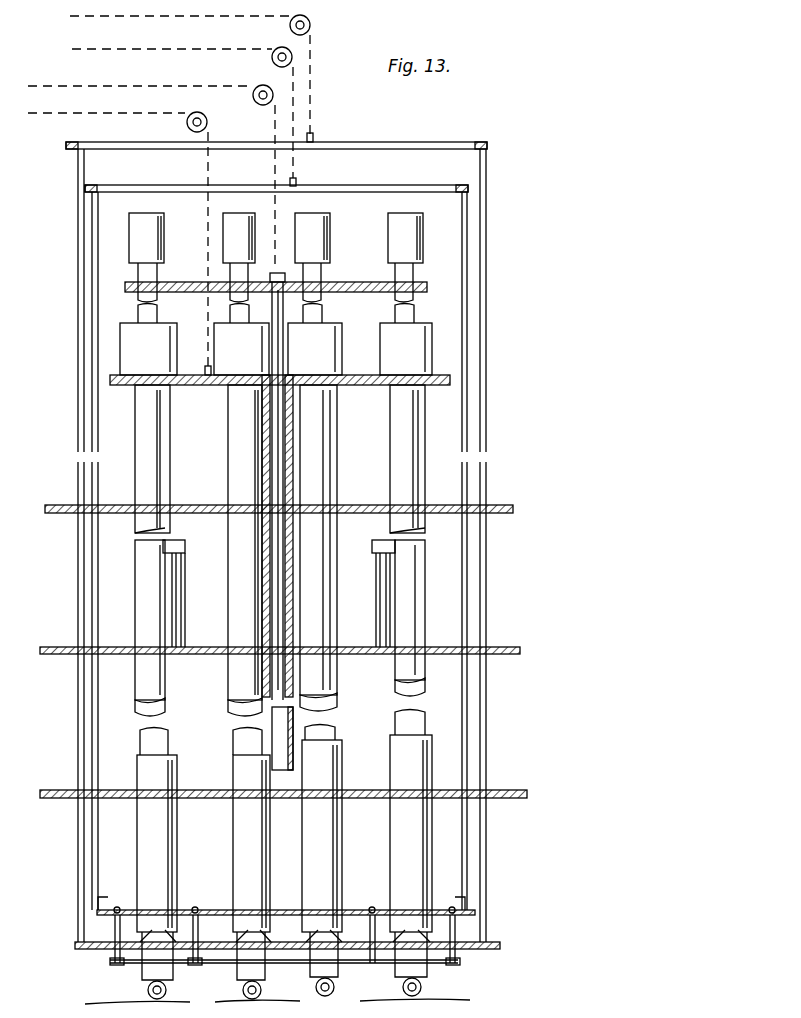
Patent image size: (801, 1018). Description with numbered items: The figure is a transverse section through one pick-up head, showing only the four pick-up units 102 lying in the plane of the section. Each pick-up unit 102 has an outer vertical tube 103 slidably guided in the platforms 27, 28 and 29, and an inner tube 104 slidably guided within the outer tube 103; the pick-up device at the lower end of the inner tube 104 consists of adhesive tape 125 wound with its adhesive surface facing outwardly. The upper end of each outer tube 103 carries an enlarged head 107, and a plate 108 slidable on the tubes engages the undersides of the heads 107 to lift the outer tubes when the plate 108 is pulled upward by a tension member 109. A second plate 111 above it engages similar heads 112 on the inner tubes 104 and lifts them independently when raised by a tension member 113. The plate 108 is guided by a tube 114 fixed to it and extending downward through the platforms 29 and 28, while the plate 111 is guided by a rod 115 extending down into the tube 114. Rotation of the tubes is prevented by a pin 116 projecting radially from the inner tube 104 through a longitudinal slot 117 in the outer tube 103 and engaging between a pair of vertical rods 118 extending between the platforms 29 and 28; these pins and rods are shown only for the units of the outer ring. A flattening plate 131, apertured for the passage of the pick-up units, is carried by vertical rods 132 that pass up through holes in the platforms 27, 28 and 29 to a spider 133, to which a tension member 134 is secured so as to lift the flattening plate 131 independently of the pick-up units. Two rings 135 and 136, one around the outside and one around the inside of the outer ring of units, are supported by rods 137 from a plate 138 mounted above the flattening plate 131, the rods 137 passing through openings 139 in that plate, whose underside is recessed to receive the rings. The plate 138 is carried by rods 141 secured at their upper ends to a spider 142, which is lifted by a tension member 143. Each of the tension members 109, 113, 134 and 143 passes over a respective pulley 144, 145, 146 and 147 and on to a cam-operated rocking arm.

The platform 27 is at (526, 790).
The platform 28 is at (514, 647).
The platform 29 is at (508, 505).
The pick-up unit 102 is at (234, 864).
The outer vertical tube 103 is at (145, 826).
The inner tube 104 is at (168, 732).
The enlarged head 107 is at (130, 352).
The plate 108 is at (445, 380).
The tension member 109 is at (158, 124).
The second plate 111 is at (430, 284).
The head 112 is at (150, 238).
The tension member 113 is at (274, 126).
The tube 114 is at (293, 450).
The rod 115 is at (262, 438).
The pin 116 is at (176, 548).
The longitudinal slot 117 is at (160, 590).
The vertical rods 118 is at (178, 590).
The adhesive tape 125 is at (243, 990).
The flattening plate 131 is at (75, 948).
The vertical rods 132 is at (78, 750).
The spider 133 is at (450, 142).
The tension member 134 is at (312, 118).
The ring 135 is at (110, 964).
The ring 136 is at (196, 964).
The rods 137 is at (97, 918).
The plate 138 is at (106, 896).
The openings 139 is at (200, 915).
The rods 141 is at (92, 706).
The spider 142 is at (448, 185).
The tension member 143 is at (310, 90).
The pulley 144 is at (222, 106).
The pulley 145 is at (263, 85).
The pulley 146 is at (282, 47).
The pulley 147 is at (310, 25).